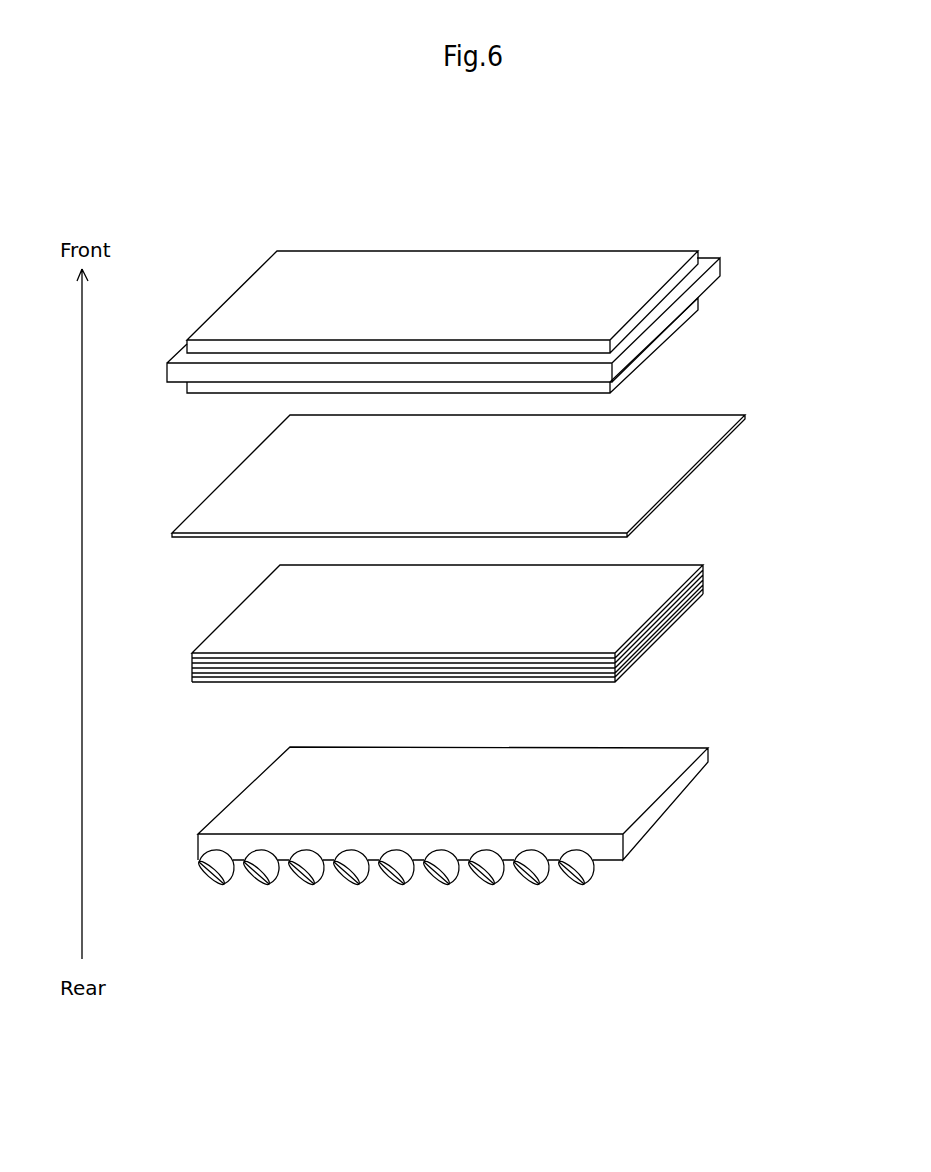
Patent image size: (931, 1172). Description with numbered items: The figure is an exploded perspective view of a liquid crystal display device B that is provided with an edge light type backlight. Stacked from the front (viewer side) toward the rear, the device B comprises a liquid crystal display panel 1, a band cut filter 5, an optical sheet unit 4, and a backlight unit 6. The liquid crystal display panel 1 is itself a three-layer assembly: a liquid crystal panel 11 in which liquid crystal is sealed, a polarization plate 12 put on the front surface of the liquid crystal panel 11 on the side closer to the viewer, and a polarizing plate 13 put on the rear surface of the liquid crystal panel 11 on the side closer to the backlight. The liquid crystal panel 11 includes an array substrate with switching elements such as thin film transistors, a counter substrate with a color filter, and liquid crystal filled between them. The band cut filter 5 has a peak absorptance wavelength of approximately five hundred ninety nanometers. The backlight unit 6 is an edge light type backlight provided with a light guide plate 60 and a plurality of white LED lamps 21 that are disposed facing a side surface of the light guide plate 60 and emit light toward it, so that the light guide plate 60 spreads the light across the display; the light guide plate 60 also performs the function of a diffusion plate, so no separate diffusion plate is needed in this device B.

The liquid crystal display device B is at (236, 206).
The liquid crystal display panel 1 is at (502, 304).
The polarization plate 12 is at (678, 267).
The liquid crystal panel 11 is at (703, 282).
The polarizing plate 13 is at (484, 344).
The band cut filter 5 is at (693, 465).
The optical sheet unit 4 is at (710, 555).
The backlight unit 6 is at (502, 835).
The light guide plate 60 is at (637, 808).
The white LED lamps 21 is at (222, 880).